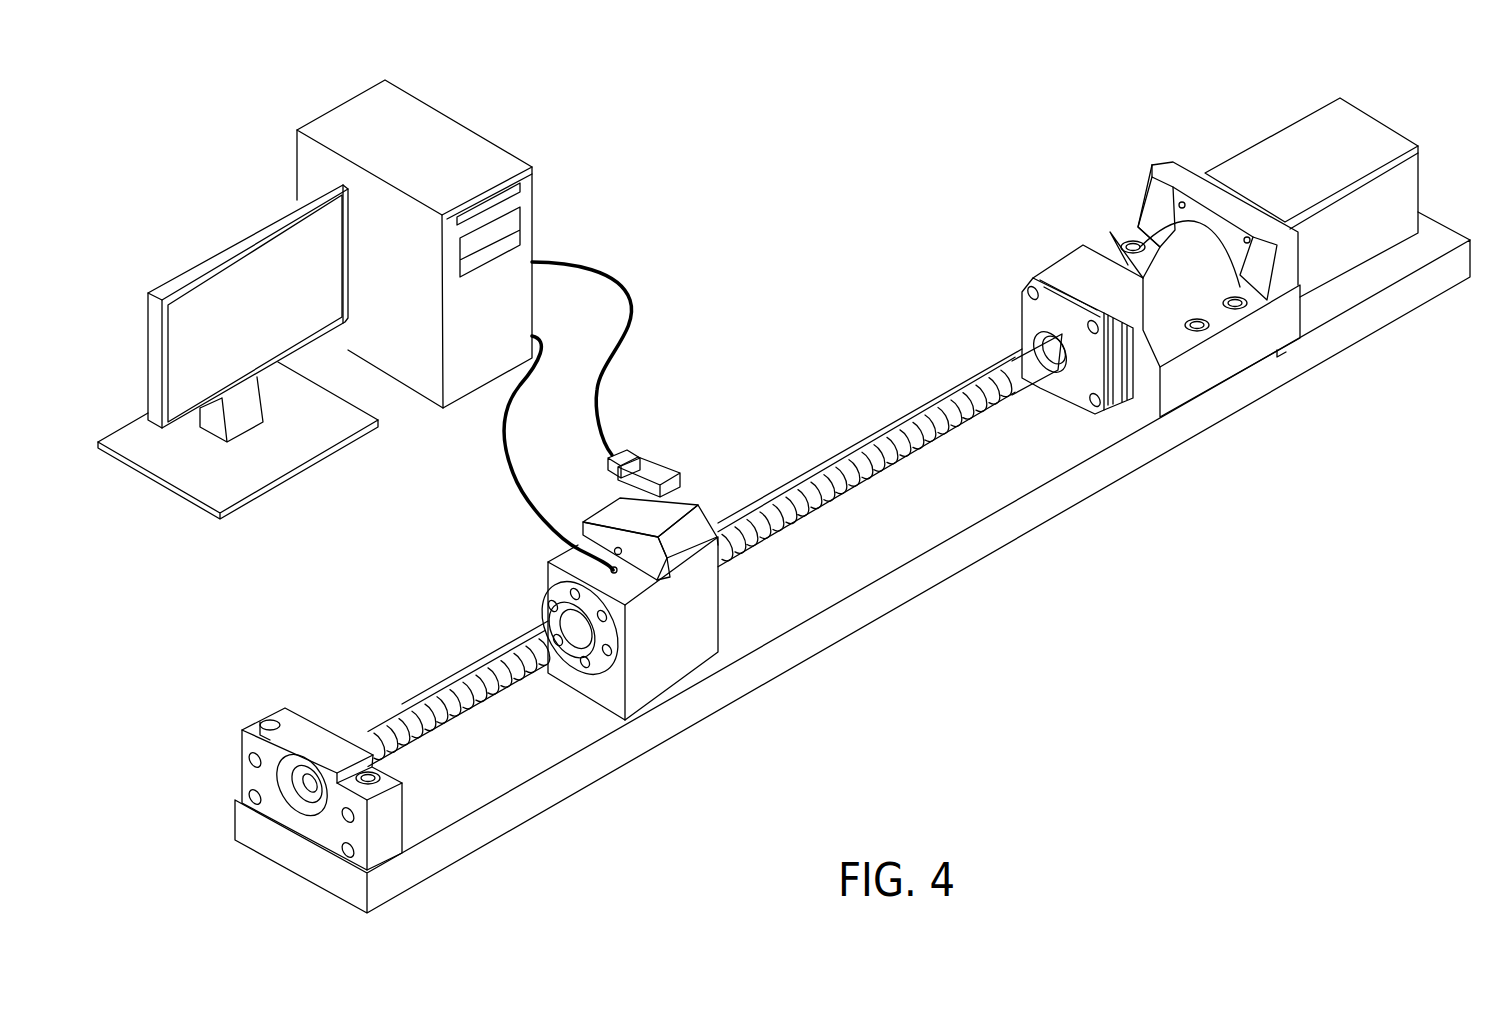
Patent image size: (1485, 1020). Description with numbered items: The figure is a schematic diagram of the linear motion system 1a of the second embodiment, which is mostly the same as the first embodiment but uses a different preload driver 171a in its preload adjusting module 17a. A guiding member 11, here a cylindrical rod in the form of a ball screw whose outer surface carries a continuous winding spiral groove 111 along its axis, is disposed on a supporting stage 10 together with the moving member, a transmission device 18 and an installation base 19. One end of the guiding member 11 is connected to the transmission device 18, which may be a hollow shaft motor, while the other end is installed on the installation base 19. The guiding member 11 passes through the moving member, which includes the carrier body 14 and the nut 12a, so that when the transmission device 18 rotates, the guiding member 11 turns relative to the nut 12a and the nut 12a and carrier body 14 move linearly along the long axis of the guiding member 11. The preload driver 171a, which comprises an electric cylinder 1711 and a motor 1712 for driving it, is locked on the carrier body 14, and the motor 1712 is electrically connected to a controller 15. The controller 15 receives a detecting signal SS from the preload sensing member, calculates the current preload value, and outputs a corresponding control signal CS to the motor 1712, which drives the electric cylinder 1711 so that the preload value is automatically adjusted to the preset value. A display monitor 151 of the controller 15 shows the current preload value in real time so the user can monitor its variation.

The linear motion system 1a is at (961, 95).
The supporting stage 10 is at (1102, 483).
The guiding member 11 is at (918, 410).
The spiral groove 111 is at (978, 387).
The nut 12a is at (547, 597).
The carrier body 14 is at (553, 558).
The controller 15 is at (313, 131).
The display monitor 151 is at (259, 252).
The preload adjusting module 17a is at (708, 415).
The preload driver 171a is at (708, 415).
The electric cylinder 1711 is at (642, 470).
The motor 1712 is at (625, 447).
The transmission device 18 is at (1257, 150).
The installation base 19 is at (303, 712).
The detecting signal SS is at (537, 385).
The control signal CS is at (642, 345).